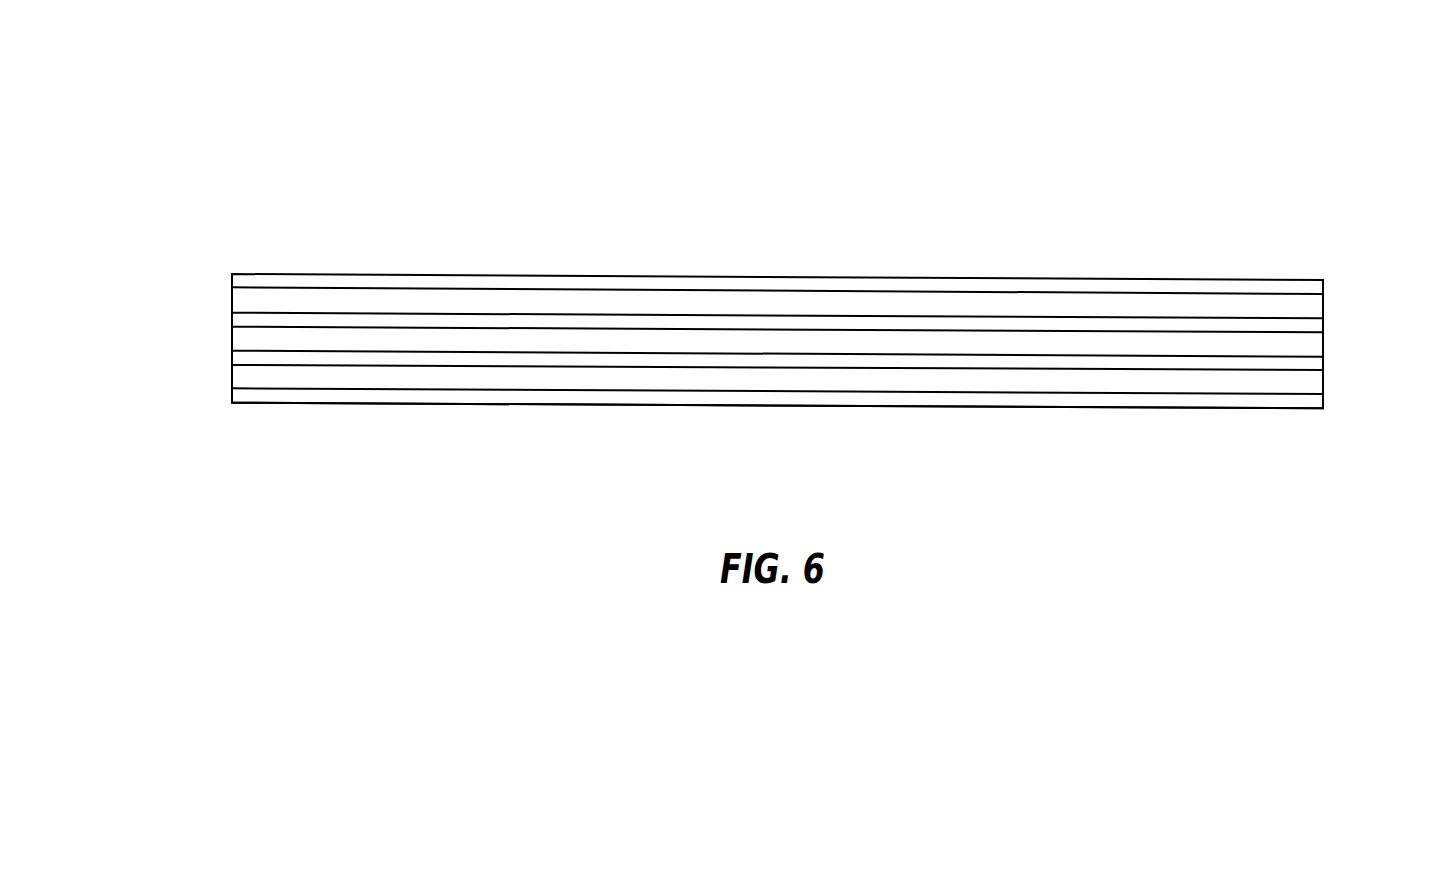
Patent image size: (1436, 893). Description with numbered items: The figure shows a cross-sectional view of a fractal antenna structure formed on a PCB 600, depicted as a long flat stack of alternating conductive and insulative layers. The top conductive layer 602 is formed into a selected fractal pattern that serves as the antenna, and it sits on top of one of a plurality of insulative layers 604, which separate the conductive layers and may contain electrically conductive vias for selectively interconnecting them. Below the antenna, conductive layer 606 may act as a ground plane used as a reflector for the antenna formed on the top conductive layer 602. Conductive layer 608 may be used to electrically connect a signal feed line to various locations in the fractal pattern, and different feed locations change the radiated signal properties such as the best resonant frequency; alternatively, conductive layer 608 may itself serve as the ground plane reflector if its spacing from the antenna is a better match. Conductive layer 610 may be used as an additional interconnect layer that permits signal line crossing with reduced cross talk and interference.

The PCB 600 is at (345, 113).
The top conductive layer 602 is at (1300, 263).
The insulative layers 604 is at (1332, 381).
The conductive layer 606 is at (217, 317).
The conductive layer 608 is at (227, 362).
The conductive layer 610 is at (352, 415).